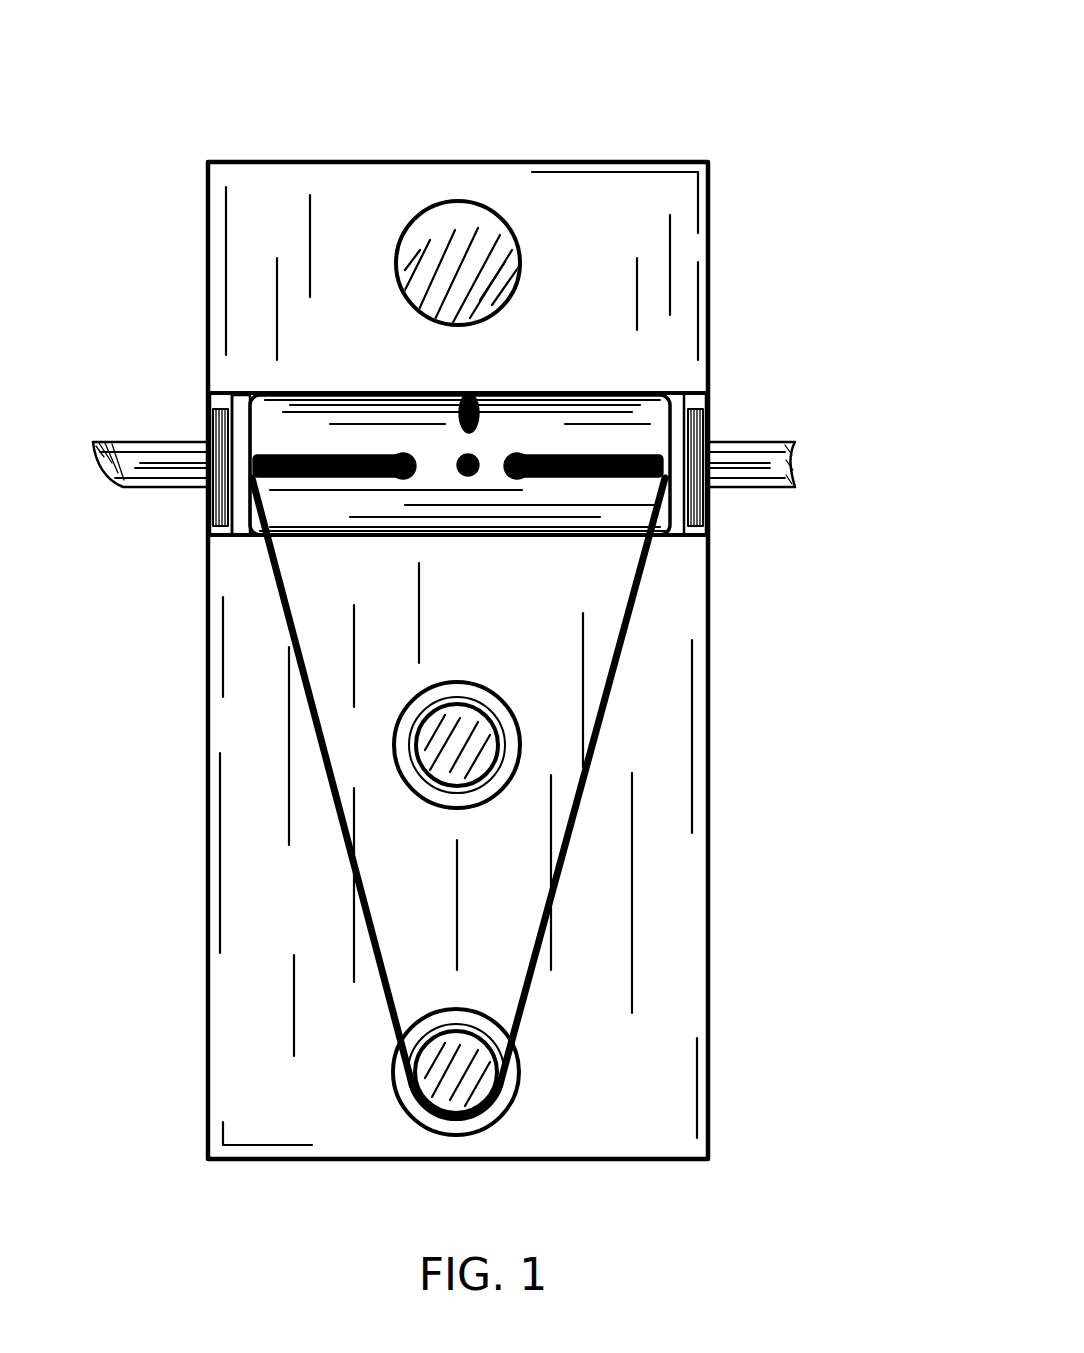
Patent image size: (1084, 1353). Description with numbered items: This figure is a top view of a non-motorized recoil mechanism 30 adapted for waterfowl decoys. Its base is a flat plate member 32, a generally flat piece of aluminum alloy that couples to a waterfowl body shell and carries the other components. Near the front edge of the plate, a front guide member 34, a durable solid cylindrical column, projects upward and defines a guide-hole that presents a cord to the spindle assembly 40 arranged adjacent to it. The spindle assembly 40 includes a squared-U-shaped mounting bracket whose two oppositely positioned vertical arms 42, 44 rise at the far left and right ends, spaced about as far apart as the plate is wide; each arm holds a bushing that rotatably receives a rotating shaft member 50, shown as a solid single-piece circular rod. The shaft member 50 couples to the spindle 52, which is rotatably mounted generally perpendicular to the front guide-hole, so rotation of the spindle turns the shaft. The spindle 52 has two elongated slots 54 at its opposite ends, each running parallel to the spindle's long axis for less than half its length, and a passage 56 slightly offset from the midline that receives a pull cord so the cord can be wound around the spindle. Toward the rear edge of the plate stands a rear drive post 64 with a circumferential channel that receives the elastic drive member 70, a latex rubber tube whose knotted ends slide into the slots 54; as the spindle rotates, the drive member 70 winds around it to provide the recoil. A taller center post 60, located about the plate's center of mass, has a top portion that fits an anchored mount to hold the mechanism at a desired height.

The non-motorized recoil mechanism 30 is at (886, 92).
The flat plate member 32 is at (660, 983).
The front guide member 34 is at (465, 218).
The spindle assembly 40 is at (243, 420).
The vertical arm 42 is at (215, 421).
The vertical arm 44 is at (698, 420).
The rotating shaft member 50 is at (148, 468).
The spindle 52 is at (423, 518).
The elongated slot 54 is at (258, 480).
The passage 56 is at (463, 455).
The center post 60 is at (455, 692).
The rear drive post 64 is at (400, 1095).
The elastic drive member 70 is at (527, 1023).